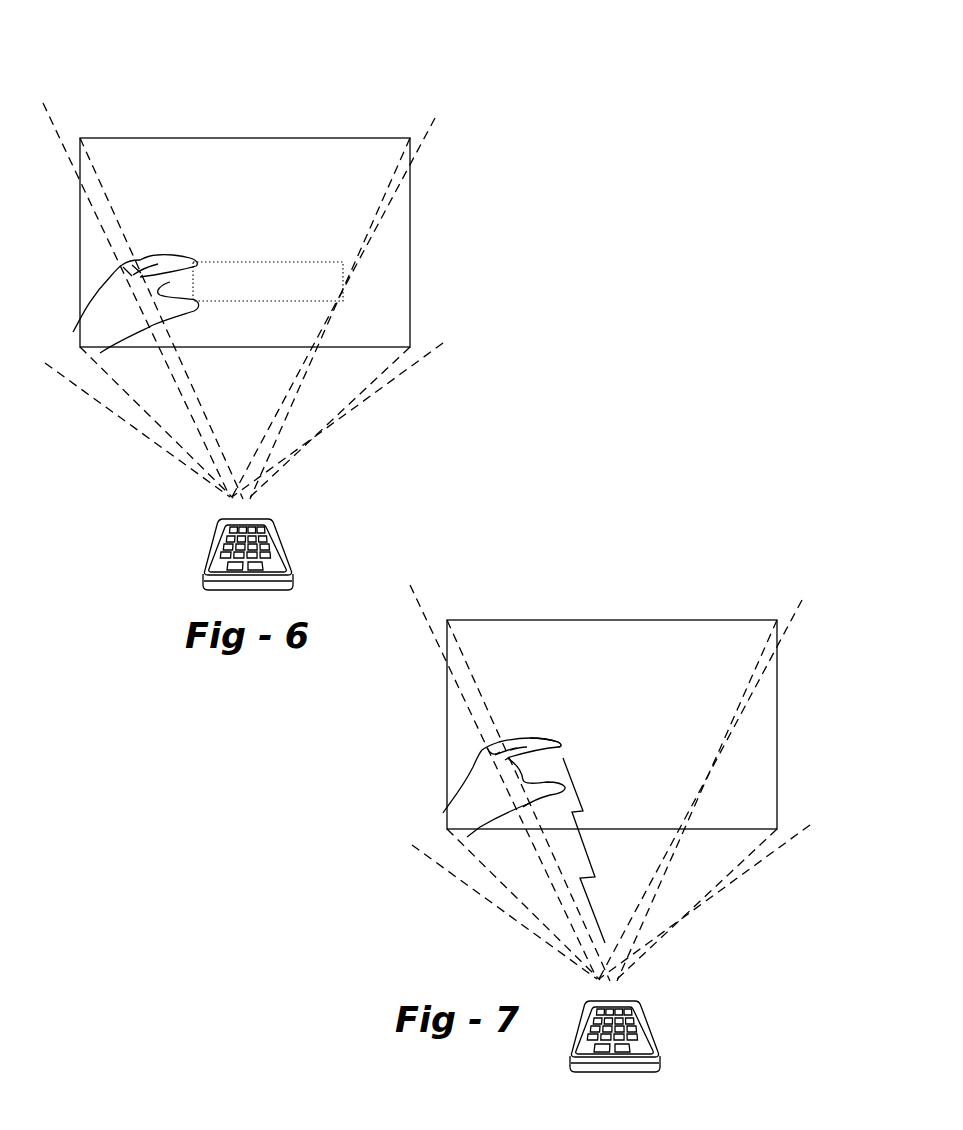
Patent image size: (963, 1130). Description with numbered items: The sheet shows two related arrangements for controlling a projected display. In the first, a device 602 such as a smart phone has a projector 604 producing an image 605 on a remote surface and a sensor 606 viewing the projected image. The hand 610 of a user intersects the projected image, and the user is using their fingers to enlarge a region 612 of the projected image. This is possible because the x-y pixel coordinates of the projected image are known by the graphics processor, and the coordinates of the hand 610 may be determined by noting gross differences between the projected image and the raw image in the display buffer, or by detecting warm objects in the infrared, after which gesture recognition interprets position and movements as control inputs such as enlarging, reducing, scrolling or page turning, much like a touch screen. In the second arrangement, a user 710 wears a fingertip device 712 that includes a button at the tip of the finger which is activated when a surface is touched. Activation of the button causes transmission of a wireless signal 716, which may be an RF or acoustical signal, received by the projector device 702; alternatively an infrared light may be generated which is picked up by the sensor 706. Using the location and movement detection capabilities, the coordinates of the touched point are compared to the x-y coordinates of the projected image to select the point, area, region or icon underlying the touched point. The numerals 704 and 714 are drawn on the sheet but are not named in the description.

In FIG. 6, the device 602 is at (203, 583).
In FIG. 6, the projector 604 is at (263, 513).
In FIG. 6, the sensor 606 is at (230, 513).
In FIG. 6, the image 605 is at (403, 277).
In FIG. 6, the hand 610 is at (106, 302).
In FIG. 6, the region 612 is at (257, 270).
In FIG. 7, the projector device 702 is at (660, 1032).
In FIG. 7, the projector 704 is at (612, 806).
In FIG. 7, the sensor 706 is at (610, 790).
In FIG. 7, the user 710 is at (476, 787).
In FIG. 7, the fingertip device 712 is at (580, 712).
In FIG. 7, the fingertip 714 is at (600, 725).
In FIG. 7, the wireless signal 716 is at (606, 850).